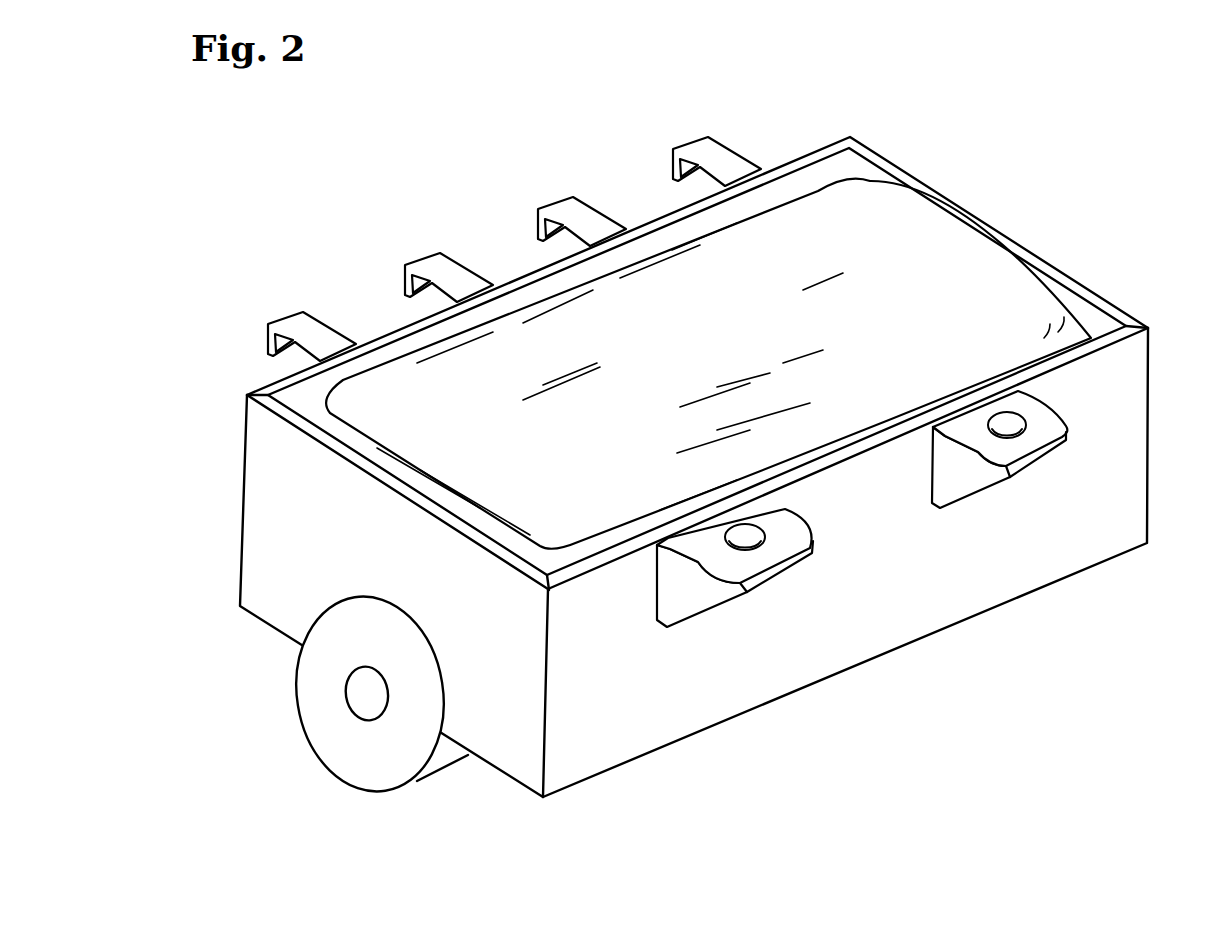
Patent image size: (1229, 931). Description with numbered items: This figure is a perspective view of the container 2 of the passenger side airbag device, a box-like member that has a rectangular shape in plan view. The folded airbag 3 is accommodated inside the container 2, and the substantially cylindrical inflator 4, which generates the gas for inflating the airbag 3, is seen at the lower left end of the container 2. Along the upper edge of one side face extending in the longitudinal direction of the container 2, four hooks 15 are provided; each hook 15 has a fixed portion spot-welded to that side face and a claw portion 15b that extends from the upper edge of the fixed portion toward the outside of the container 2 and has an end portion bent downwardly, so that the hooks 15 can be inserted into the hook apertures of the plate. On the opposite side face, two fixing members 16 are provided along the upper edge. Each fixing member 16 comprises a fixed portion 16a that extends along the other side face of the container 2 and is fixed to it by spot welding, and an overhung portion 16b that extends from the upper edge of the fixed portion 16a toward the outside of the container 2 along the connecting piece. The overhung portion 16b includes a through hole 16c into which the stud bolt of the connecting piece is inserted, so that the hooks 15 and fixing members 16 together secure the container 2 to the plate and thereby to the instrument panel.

The container 2 is at (1076, 283).
The airbag 3 is at (863, 249).
The inflator 4 is at (347, 742).
The hook 15 is at (512, 215).
The claw portion 15b is at (272, 294).
The fixing member 16 is at (934, 573).
The fixed portion 16a is at (963, 482).
The overhung portion 16b is at (1053, 433).
The through hole 16c is at (1021, 423).